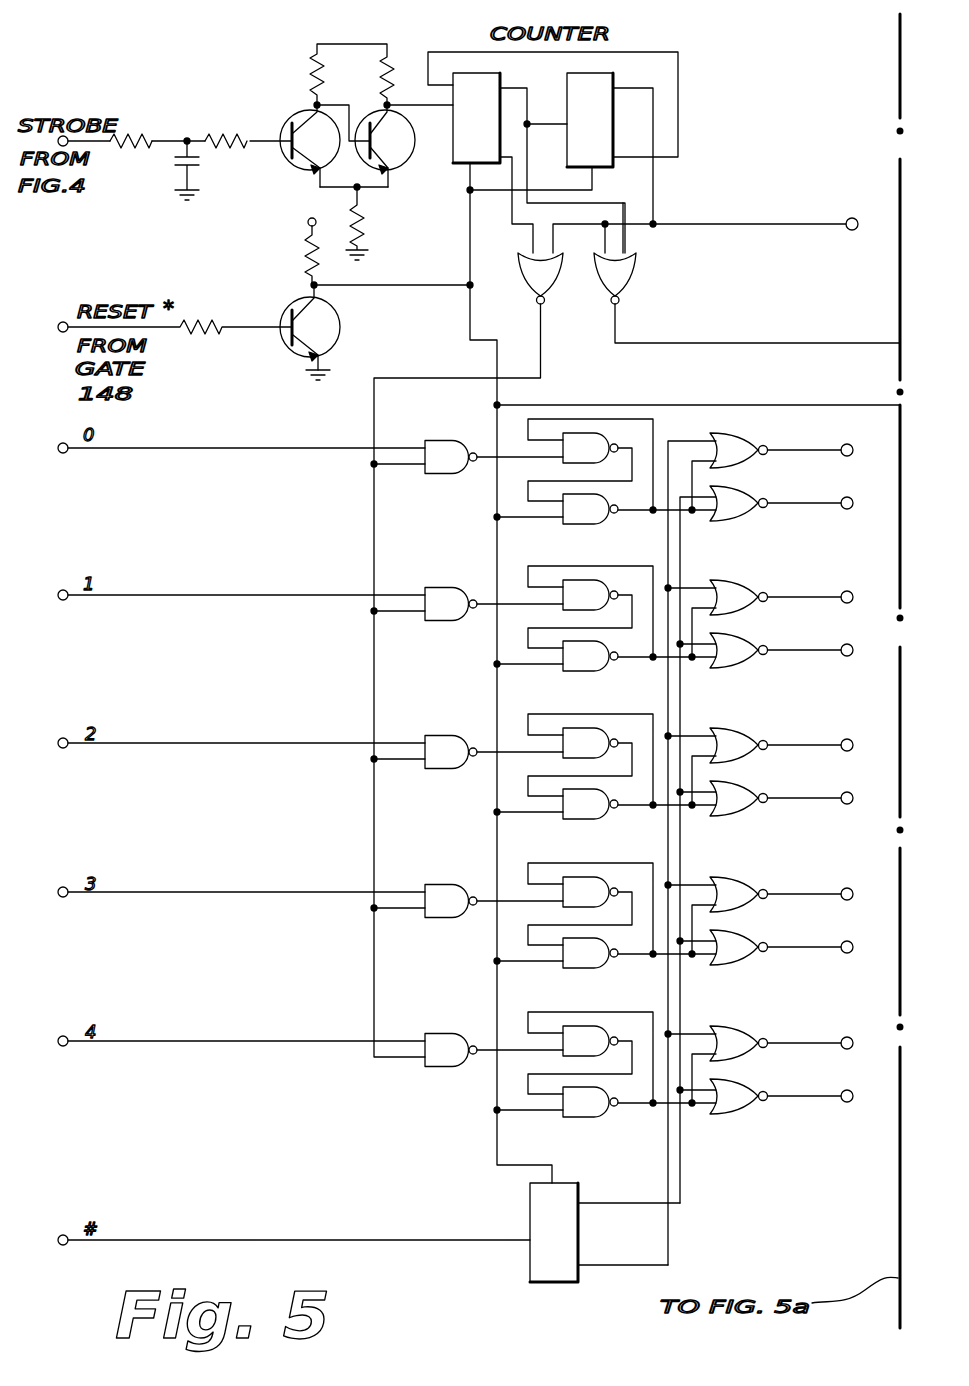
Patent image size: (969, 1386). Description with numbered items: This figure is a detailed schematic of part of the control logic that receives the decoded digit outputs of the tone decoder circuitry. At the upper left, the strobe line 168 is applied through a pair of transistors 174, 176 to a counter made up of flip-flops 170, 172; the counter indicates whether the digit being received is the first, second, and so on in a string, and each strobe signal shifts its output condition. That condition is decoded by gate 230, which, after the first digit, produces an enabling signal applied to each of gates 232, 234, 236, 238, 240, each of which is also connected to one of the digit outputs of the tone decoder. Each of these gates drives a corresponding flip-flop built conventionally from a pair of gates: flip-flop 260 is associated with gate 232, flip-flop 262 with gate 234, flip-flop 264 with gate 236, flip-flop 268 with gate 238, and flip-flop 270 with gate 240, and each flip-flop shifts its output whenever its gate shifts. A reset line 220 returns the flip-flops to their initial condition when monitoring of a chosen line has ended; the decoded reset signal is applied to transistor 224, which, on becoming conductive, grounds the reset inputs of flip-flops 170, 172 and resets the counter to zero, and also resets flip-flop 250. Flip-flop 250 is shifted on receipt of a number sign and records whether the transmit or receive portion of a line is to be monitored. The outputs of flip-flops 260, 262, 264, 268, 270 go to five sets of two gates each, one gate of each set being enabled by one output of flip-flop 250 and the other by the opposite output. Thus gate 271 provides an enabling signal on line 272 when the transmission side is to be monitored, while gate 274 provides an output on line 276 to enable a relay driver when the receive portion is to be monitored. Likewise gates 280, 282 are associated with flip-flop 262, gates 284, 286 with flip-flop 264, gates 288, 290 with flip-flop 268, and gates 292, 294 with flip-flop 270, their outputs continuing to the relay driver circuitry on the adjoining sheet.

The strobe line 168 is at (112, 148).
The flip-flop 170 is at (470, 84).
The flip-flop 172 is at (602, 85).
The transistor 174 is at (287, 128).
The transistor 176 is at (368, 118).
The reset line 220 is at (868, 396).
The transistor 224 is at (284, 350).
The gate 230 is at (528, 268).
The gate 232 is at (446, 474).
The gate 234 is at (448, 621).
The gate 236 is at (458, 768).
The gate 238 is at (446, 918).
The gate 240 is at (455, 1066).
The flip-flop 250 is at (556, 1286).
The flip-flop 260 is at (598, 424).
The flip-flop 262 is at (572, 572).
The flip-flop 264 is at (568, 722).
The flip-flop 268 is at (566, 868).
The flip-flop 270 is at (562, 1016).
The gate 271 is at (742, 452).
The line 272 is at (810, 450).
The gate 274 is at (752, 504).
The line 276 is at (846, 509).
The gate 280 is at (735, 598).
The gate 282 is at (736, 660).
The gate 284 is at (735, 746).
The gate 286 is at (734, 806).
The gate 288 is at (732, 896).
The gate 290 is at (732, 956).
The gate 292 is at (730, 1044).
The gate 294 is at (732, 1108).